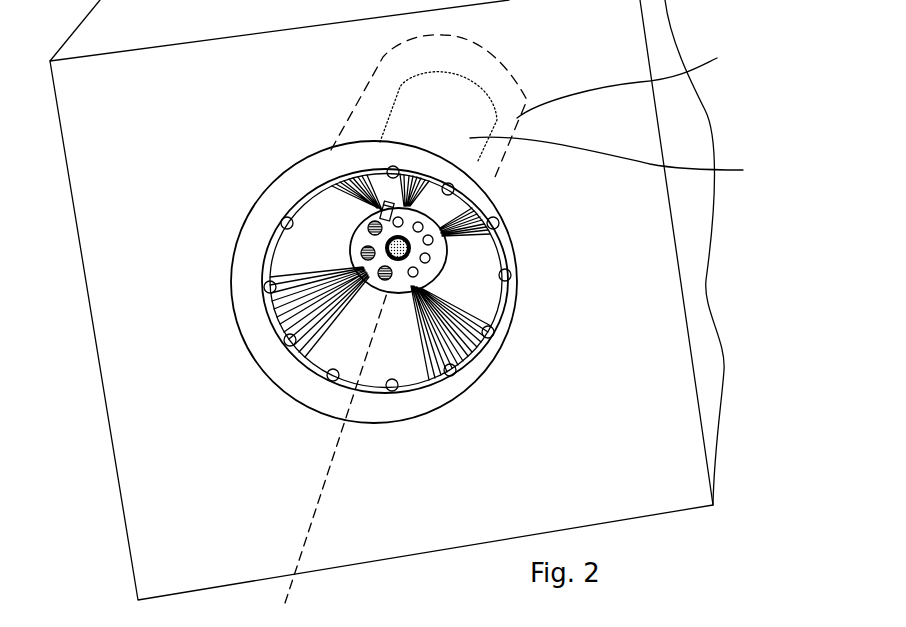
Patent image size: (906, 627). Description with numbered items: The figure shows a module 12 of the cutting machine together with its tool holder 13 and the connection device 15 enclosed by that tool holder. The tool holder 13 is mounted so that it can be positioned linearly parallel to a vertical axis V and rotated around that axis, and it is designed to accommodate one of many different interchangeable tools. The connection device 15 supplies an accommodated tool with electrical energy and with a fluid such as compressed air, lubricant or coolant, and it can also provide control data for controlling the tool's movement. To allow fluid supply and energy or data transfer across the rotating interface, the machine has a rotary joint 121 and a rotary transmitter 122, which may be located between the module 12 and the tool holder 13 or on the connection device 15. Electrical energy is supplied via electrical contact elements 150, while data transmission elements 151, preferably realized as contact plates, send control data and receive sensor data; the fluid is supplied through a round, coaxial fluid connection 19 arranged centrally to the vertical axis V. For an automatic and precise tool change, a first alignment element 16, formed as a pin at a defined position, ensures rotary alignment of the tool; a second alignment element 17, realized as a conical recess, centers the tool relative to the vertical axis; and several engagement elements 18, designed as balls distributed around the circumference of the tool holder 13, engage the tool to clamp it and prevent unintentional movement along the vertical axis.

The module 12 is at (453, 106).
The rotary joint 121 is at (631, 161).
The rotary transmitter 122 is at (641, 79).
The tool holder 13 is at (222, 202).
The connection device 15 is at (440, 263).
The first alignment element 16 is at (380, 202).
The second alignment element 17 is at (413, 363).
The engagement elements 18 is at (456, 371).
The fluid connection 19 is at (411, 248).
The electrical contact elements 150 is at (360, 251).
The data transmission elements 151 is at (417, 275).
The vertical axis V is at (310, 523).